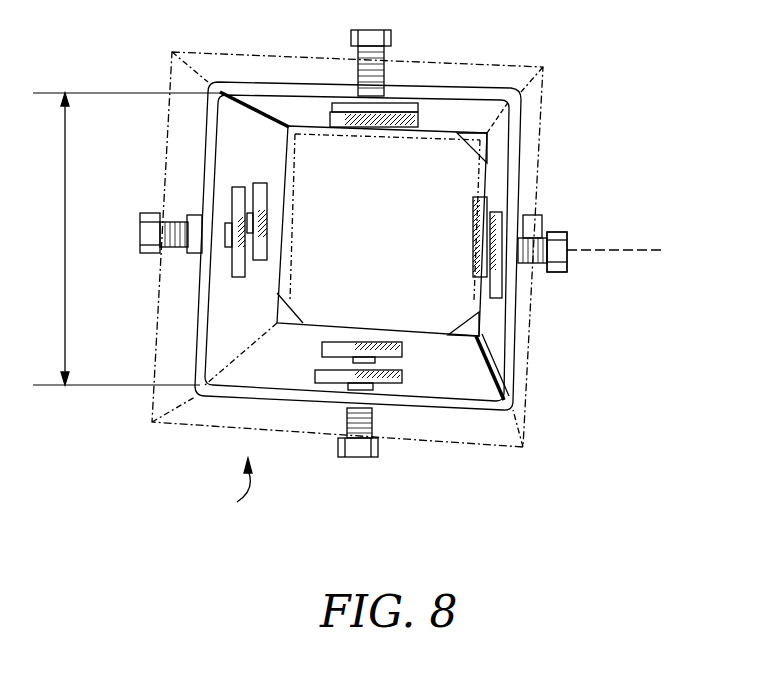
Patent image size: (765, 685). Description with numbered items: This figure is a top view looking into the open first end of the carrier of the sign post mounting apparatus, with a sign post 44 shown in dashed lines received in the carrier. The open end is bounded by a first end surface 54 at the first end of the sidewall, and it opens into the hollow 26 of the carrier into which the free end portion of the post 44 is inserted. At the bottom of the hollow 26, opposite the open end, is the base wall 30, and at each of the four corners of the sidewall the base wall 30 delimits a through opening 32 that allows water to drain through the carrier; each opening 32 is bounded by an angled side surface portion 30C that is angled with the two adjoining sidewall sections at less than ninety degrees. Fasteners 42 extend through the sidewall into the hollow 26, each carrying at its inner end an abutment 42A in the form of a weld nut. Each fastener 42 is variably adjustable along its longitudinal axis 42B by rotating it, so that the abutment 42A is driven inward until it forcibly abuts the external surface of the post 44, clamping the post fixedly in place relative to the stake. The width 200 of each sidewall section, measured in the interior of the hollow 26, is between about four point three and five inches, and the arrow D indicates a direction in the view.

The hollow 26 is at (320, 260).
The base wall 30 is at (315, 145).
The angled side surface portion 30C is at (484, 134).
The through openings 32 is at (482, 336).
The fastener 42 is at (556, 270).
The abutment 42A is at (417, 116).
The longitudinal axis 42B is at (656, 250).
The sign post 44 is at (505, 450).
The first end surface 54 is at (522, 164).
The width 200 is at (127, 239).
The direction D is at (233, 506).